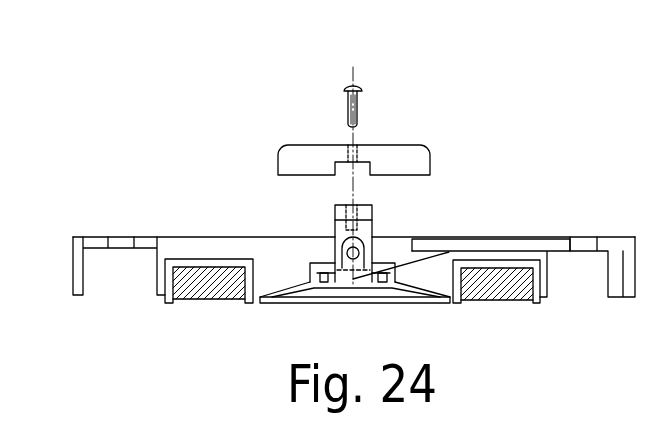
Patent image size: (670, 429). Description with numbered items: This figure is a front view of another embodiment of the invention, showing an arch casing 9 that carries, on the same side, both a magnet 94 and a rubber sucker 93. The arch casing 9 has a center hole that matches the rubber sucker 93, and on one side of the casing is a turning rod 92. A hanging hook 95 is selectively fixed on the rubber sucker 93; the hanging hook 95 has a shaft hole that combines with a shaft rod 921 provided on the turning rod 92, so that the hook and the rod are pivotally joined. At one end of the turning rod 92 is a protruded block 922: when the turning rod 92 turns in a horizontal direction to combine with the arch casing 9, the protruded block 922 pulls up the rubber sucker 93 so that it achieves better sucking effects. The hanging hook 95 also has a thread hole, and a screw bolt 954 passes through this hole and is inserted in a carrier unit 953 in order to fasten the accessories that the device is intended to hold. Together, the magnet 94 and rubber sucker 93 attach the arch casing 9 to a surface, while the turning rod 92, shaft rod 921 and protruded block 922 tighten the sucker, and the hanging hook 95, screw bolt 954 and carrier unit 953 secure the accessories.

The arch casing 9 is at (195, 250).
The turning rod 92 is at (467, 242).
The shaft rod 921 is at (335, 263).
The protruded block 922 is at (337, 282).
The rubber sucker 93 is at (408, 294).
The magnet 94 is at (513, 293).
The hanging hook 95 is at (372, 225).
The carrier unit 953 is at (410, 160).
The screw bolt 954 is at (357, 105).